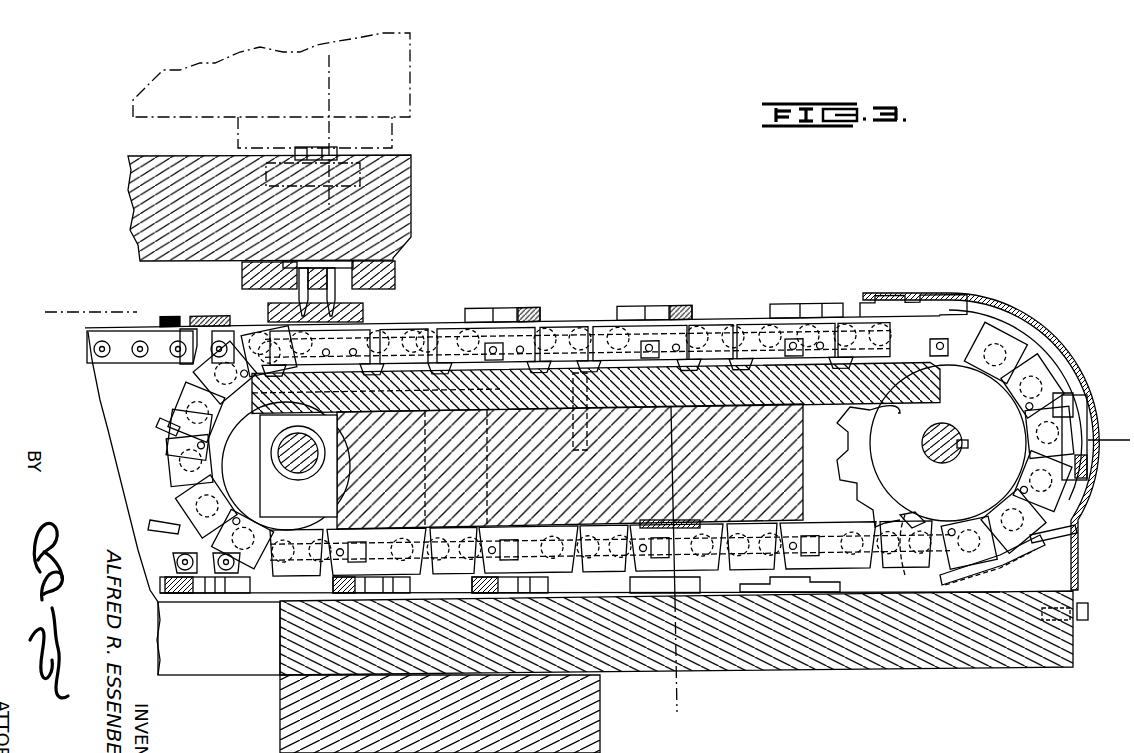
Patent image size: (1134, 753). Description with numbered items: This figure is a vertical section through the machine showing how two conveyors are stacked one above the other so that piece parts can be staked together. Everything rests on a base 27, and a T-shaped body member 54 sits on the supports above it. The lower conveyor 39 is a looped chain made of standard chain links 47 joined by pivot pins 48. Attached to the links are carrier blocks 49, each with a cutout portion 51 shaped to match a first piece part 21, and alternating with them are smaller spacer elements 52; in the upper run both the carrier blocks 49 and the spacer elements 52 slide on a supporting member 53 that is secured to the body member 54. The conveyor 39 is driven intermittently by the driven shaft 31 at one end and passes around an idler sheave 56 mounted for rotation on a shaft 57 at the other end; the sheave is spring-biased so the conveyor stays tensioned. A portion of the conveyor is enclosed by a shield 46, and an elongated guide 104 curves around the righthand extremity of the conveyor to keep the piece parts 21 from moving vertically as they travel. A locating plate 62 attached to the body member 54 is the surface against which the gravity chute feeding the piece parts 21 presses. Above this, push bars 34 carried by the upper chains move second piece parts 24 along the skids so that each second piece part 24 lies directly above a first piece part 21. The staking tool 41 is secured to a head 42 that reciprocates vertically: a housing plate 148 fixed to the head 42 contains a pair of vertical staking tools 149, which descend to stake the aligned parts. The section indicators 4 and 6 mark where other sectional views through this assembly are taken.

The section line 4- 4 is at (68, 322).
The section line 6- 6 is at (306, 93).
The first piece part 21 is at (478, 332).
The second piece part 24 is at (423, 320).
The base 27 is at (947, 653).
The driven shaft 31 is at (952, 432).
The push bar 34 is at (527, 308).
The conveyor 39 is at (175, 447).
The staking tool 41 is at (408, 266).
The head 42 is at (411, 176).
The shield 46 is at (947, 292).
The chain link 47 is at (822, 333).
The pivot pin 48 is at (910, 514).
The carrier block 49 is at (188, 430).
The cutout portion 51 is at (200, 387).
The spacer element 52 is at (557, 337).
The supporting member 53 is at (898, 413).
The T-shaped body member 54 is at (797, 455).
The idler sheave 56 is at (237, 462).
The shaft 57 is at (298, 462).
The locating plate 62 is at (660, 532).
The elongated guide 104 is at (1030, 550).
The housing plate 148 is at (242, 271).
The vertical staking tool 149 is at (300, 284).